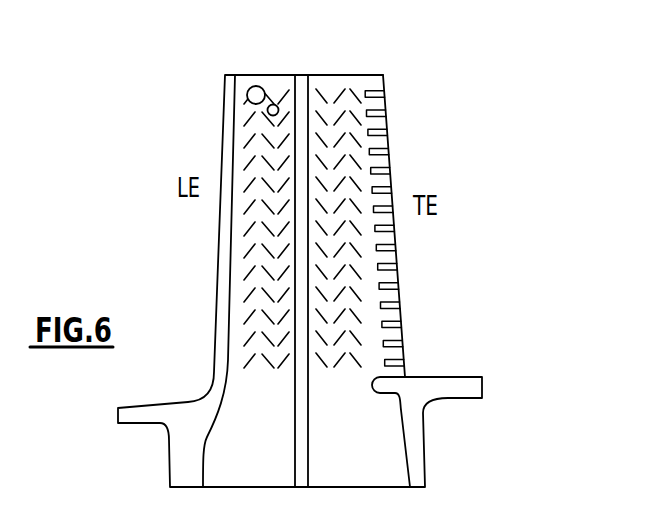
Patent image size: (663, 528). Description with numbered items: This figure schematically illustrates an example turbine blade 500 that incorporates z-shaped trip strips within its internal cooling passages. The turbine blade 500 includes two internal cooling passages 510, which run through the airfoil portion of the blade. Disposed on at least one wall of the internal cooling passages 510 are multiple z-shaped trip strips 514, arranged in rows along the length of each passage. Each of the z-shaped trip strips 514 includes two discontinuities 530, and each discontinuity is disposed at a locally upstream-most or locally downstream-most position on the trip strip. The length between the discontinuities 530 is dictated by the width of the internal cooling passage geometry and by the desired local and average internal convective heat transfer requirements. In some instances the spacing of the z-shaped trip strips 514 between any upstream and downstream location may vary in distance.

The turbine blade 500 is at (352, 252).
The internal cooling passages 510 is at (347, 74).
The z-shaped trip strips 514 is at (267, 237).
The discontinuities 530 is at (272, 104).